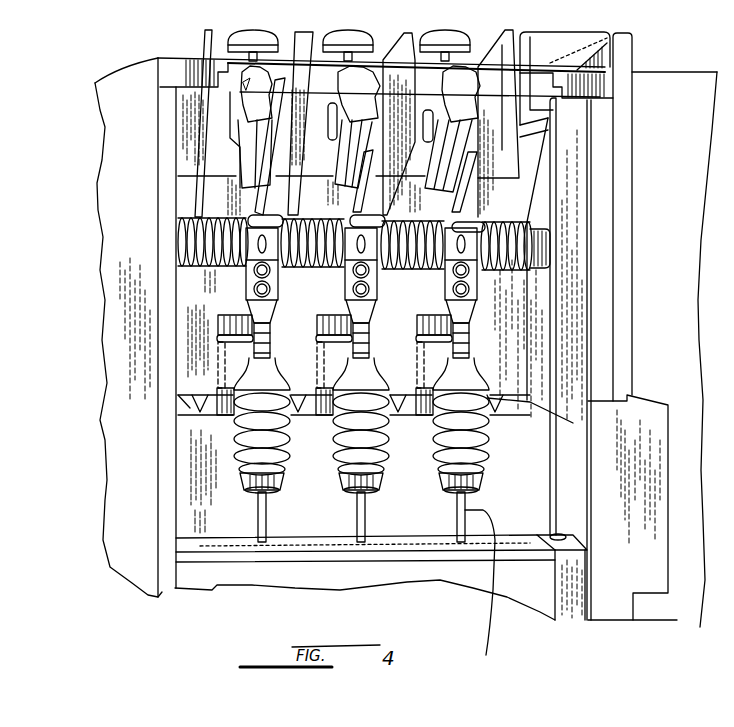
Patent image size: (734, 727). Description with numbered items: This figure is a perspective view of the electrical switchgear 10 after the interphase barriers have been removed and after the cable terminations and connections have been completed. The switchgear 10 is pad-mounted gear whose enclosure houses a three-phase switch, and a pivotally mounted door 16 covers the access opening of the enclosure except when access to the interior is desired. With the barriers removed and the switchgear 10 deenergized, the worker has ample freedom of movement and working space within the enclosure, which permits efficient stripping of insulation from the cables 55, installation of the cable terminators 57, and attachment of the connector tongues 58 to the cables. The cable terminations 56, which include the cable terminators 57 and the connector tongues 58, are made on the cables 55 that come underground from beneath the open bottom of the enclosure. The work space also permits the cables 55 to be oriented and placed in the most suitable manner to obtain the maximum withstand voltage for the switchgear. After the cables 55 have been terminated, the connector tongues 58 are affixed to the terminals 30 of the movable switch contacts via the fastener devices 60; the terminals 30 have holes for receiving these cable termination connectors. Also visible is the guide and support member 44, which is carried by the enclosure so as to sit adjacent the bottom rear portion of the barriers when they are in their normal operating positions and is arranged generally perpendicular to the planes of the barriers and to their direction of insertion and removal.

The electrical switchgear 10 is at (90, 228).
The pivotally mounted door 16 is at (643, 98).
The terminals 30 is at (467, 253).
The guide and support member 44 is at (210, 420).
The cables 55 is at (490, 590).
The cable terminations 56 is at (493, 349).
The cable terminators 57 is at (457, 383).
The connector tongues 58 is at (473, 292).
The fastener devices 60 is at (244, 288).